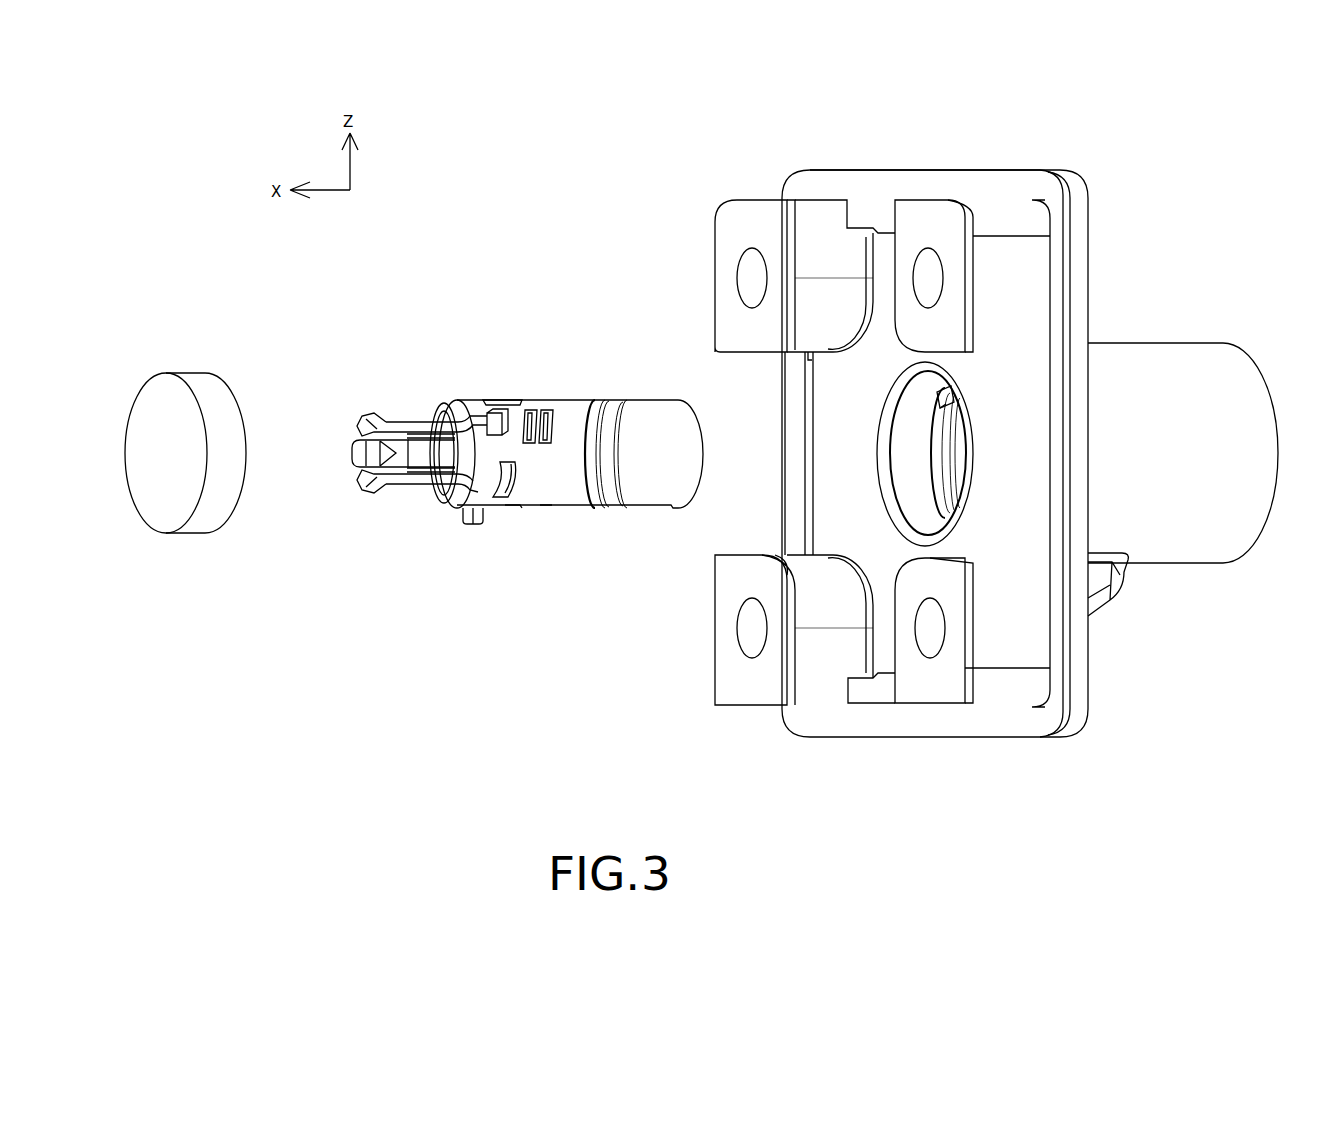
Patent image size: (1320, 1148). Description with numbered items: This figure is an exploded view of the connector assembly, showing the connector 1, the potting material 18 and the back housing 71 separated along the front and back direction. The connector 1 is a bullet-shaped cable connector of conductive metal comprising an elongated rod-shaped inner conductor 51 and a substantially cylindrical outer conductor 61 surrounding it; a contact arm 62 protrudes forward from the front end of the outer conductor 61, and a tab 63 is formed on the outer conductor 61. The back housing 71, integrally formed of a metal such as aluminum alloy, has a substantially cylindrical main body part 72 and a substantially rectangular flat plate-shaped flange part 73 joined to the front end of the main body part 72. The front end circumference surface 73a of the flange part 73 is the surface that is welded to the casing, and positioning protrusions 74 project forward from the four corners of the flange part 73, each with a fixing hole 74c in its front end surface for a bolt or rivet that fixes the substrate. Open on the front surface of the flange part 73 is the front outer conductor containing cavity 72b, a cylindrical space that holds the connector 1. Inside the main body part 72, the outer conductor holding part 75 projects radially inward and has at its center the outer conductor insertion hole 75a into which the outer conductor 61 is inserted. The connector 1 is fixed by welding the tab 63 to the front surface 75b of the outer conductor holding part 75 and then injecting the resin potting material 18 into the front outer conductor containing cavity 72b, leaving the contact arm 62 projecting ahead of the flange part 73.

The connector 1 is at (499, 471).
The potting material 18 is at (158, 521).
The inner conductor 51 is at (352, 457).
The outer conductor 61 is at (565, 400).
The contact arm 62 is at (411, 414).
The tab 63 is at (470, 527).
The back housing 71 is at (1165, 343).
The main body part 72 is at (1183, 564).
The front outer conductor containing cavity 72b is at (920, 513).
The flange part 73 is at (963, 430).
The front end circumference surface 73a is at (896, 178).
The positioning protrusion 74 is at (826, 421).
The fixing hole 74c is at (749, 267).
The outer conductor holding part 75 is at (809, 577).
The outer conductor insertion hole 75a is at (955, 460).
The front surface 75b is at (943, 420).